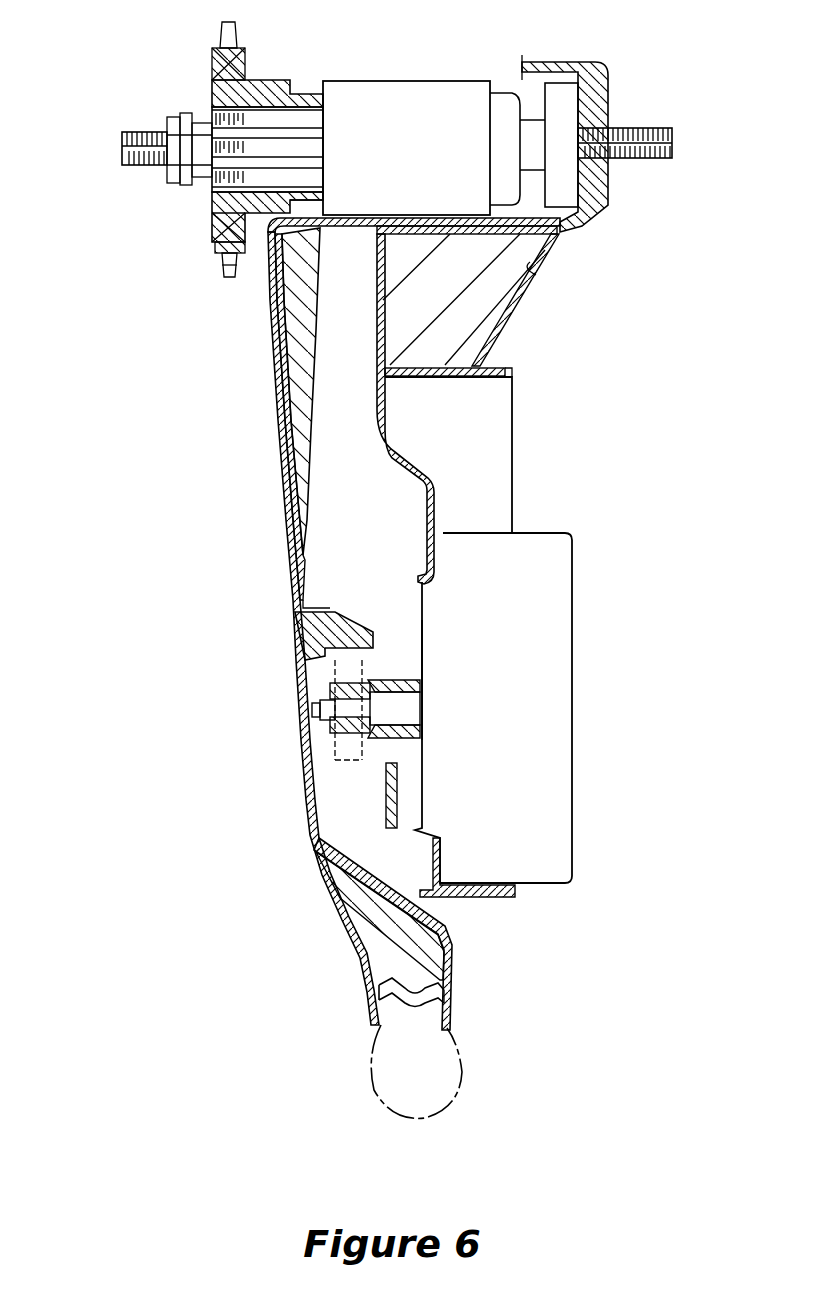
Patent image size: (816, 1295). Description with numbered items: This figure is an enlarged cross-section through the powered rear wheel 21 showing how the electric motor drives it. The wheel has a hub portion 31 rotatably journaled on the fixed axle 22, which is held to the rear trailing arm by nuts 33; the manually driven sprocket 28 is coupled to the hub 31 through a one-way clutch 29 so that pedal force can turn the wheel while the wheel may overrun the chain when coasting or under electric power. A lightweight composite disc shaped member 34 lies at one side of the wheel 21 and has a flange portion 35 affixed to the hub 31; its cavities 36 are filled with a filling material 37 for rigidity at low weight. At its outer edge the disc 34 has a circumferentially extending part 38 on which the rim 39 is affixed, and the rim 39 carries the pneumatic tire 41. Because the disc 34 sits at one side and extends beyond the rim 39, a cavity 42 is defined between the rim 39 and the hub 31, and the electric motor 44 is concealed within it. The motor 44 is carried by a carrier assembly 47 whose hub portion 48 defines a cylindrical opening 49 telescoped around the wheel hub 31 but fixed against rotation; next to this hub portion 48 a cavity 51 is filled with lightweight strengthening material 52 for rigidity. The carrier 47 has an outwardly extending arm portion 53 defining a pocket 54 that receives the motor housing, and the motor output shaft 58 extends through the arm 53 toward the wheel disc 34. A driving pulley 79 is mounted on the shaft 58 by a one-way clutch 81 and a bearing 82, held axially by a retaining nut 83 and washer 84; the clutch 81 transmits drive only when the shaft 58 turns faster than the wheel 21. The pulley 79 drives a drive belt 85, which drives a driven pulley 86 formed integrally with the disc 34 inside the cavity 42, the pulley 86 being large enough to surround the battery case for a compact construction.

The rear wheel 21 is at (264, 441).
The fixed axle 22 is at (147, 162).
The driven sprocket 28 is at (220, 265).
The one-way clutch 29 is at (212, 222).
The hub portion 31 is at (410, 95).
The nuts 33 is at (175, 115).
The disc shaped member 34 is at (276, 402).
The flange portion 35 is at (312, 200).
The cavities 36 is at (290, 373).
The filling material 37 is at (290, 303).
The circumferentially extending part 38 is at (382, 994).
The rim 39 is at (452, 1012).
The pneumatic tire 41 is at (470, 1098).
The cavity 42 is at (362, 568).
The electric motor 44 is at (558, 687).
The carrier assembly 47 is at (616, 181).
The hub portion 48 is at (590, 90).
The cylindrical opening 49 is at (430, 216).
The cavity 51 is at (540, 268).
The strengthening material 52 is at (498, 337).
The arm portion 53 is at (428, 505).
The pocket 54 is at (500, 885).
The motor output shaft 58 is at (407, 677).
The driving pulley 79 is at (388, 668).
The one-way clutch 81 is at (345, 735).
The bearing 82 is at (405, 738).
The retaining nut 83 is at (330, 722).
The washer 84 is at (335, 700).
The drive belt 85 is at (340, 673).
The driven pulley 86 is at (307, 655).